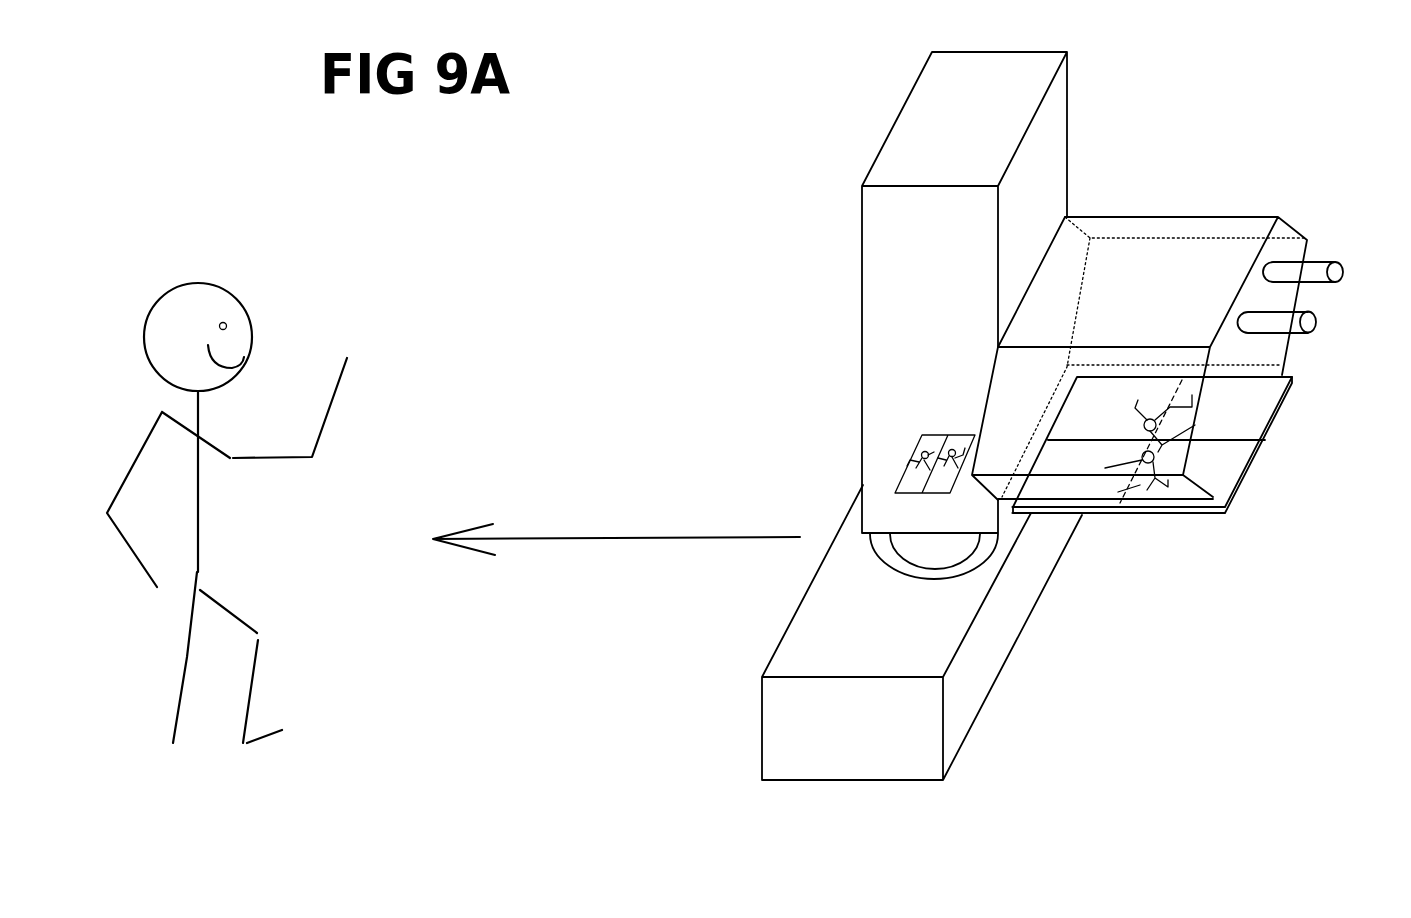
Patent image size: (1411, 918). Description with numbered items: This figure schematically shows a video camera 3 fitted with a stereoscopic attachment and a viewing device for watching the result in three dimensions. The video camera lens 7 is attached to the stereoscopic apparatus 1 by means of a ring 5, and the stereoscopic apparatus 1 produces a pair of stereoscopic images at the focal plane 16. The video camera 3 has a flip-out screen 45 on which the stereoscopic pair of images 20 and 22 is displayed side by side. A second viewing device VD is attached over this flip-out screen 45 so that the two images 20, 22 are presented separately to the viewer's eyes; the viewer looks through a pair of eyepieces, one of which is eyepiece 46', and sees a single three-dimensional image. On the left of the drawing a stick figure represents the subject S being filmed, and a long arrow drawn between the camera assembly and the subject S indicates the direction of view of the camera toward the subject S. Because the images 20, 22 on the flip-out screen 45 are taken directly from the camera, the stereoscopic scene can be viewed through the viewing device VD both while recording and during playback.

The stereoscopic apparatus 1 is at (780, 740).
The video camera 3 is at (883, 265).
The ring 5 is at (903, 600).
The video camera lens 7 is at (967, 568).
The focal plane 16 is at (971, 413).
The second viewing device VD is at (1210, 247).
The eyepiece 46' is at (1318, 347).
The stereoscopic image 22 is at (1213, 412).
The stereoscopic image 20 is at (1200, 468).
The flip-out screen 45 is at (1197, 532).
The subject S is at (227, 260).